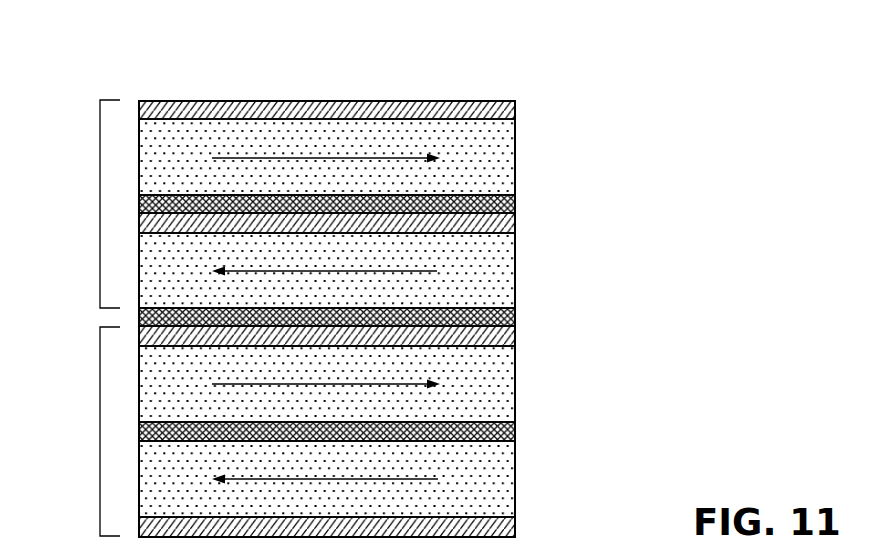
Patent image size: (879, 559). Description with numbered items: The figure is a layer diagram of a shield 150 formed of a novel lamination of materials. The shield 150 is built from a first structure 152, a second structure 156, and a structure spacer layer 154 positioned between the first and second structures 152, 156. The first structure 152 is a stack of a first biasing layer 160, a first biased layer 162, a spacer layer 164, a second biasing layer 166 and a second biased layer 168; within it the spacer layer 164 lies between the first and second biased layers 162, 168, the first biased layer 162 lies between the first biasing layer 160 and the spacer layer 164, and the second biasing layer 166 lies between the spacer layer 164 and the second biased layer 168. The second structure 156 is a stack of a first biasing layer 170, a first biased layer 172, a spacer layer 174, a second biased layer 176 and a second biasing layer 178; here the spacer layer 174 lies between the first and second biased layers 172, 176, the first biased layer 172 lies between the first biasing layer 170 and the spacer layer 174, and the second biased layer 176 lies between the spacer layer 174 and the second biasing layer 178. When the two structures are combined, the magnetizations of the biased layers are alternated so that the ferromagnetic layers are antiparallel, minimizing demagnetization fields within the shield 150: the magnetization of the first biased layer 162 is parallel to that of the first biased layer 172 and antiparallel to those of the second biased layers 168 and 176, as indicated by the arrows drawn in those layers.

The shield 150 is at (84, 82).
The first structure 152 is at (100, 204).
The structure spacer layer 154 is at (150, 317).
The second structure 156 is at (100, 432).
The first biasing layer 160 is at (495, 112).
The first biased layer 162 is at (495, 159).
The spacer layer 164 is at (495, 206).
The second biasing layer 166 is at (500, 223).
The second biased layer 168 is at (495, 272).
The first biasing layer 170 is at (500, 337).
The first biased layer 172 is at (495, 384).
The spacer layer 174 is at (500, 432).
The second biased layer 176 is at (495, 479).
The second biasing layer 178 is at (495, 527).